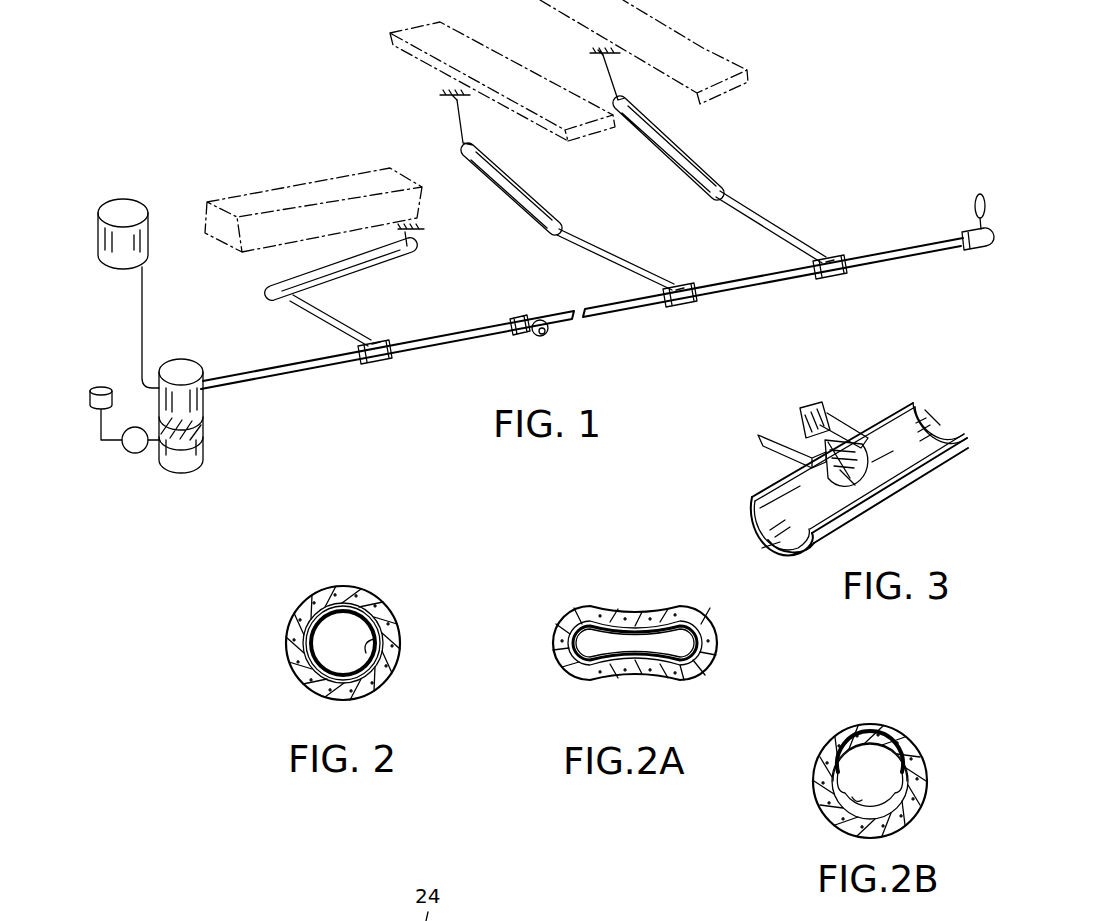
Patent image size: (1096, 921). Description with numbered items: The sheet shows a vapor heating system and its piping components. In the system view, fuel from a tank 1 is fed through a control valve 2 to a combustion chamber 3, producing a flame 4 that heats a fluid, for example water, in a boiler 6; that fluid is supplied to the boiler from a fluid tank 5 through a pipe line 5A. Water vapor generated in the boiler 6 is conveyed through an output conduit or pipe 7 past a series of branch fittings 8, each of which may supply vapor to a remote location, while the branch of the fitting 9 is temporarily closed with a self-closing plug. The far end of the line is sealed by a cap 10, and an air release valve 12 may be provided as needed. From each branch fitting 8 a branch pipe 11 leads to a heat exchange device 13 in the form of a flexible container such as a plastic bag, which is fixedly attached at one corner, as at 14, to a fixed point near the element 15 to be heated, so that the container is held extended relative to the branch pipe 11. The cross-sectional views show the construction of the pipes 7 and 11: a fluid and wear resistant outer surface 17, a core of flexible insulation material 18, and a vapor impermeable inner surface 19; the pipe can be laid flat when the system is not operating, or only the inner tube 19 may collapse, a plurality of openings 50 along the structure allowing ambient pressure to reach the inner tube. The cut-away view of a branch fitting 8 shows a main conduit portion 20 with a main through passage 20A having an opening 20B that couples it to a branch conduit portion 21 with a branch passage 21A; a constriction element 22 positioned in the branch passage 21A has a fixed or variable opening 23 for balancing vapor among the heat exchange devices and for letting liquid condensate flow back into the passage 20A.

In FIG. 1, the tank 1 is at (100, 387).
In FIG. 1, the control valve 2 is at (130, 452).
In FIG. 1, the combustion chamber 3 is at (200, 453).
In FIG. 1, the flame 4 is at (205, 425).
In FIG. 1, the fluid tank 5 is at (135, 197).
In FIG. 1, the pipe line 5A is at (145, 303).
In FIG. 1, the boiler 6 is at (190, 372).
In FIG. 1, the output conduit or pipe 7 is at (306, 383).
In FIG. 1, the branch fitting 8 is at (390, 363).
In FIG. 1, the fitting 9 is at (536, 310).
In FIG. 1, the cap 10 is at (978, 250).
In FIG. 1, the conduit or pipe 11 is at (320, 330).
In FIG. 1, the air release valve 12 is at (978, 194).
In FIG. 1, the heat exchange device 13 is at (352, 275).
In FIG. 1, the fixed attachment point 14 is at (413, 246).
In FIG. 1, the element to be heated 15 is at (288, 198).
In FIG. 2, the outer surface 17 is at (402, 636).
In FIG. 2A, the outer surface 17 is at (716, 643).
In FIG. 2, the core of flexible insulation material 18 is at (387, 603).
In FIG. 2, the inner surface 19 is at (372, 655).
In FIG. 2B, the inner surface 19 is at (838, 803).
In FIG. 3, the main conduit portion 20 is at (822, 533).
In FIG. 3, the main through passage 20A is at (758, 518).
In FIG. 3, the opening 20B is at (920, 420).
In FIG. 3, the branch conduit portion 21 is at (765, 448).
In FIG. 3, the branch passage 21A is at (787, 432).
In FIG. 3, the constriction element 22 is at (823, 420).
In FIG. 3, the opening 23 is at (853, 487).
In FIG. 2B, the openings 50 is at (898, 740).